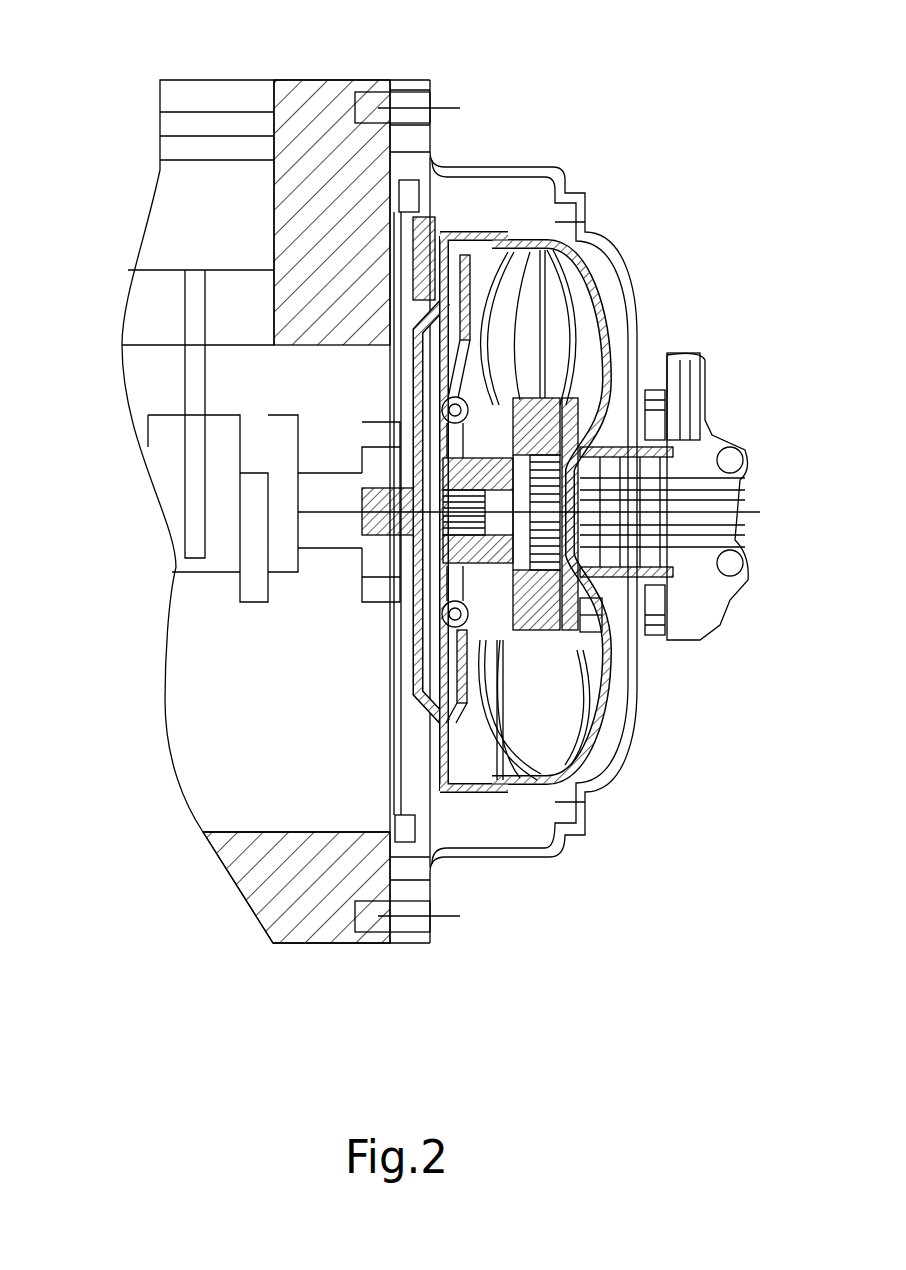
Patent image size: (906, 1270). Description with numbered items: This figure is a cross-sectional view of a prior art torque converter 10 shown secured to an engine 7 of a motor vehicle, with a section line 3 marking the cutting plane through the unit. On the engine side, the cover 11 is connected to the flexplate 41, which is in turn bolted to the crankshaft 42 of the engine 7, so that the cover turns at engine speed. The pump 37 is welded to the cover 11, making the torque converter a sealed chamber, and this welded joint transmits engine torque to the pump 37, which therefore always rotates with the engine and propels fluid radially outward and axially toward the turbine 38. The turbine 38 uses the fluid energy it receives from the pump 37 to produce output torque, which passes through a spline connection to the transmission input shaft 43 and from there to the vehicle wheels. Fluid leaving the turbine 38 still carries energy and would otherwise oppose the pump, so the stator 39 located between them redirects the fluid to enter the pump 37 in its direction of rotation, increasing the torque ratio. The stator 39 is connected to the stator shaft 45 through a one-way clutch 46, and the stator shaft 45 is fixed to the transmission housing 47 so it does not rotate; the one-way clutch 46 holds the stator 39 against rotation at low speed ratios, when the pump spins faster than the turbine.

The section line III-III 3 is at (409, 810).
The engine 7 is at (400, 859).
The torque converter 10 is at (606, 273).
The cover 11 is at (393, 367).
The pump 37 is at (602, 746).
The turbine 38 is at (480, 750).
The stator 39 is at (505, 667).
The flexplate 41 is at (403, 648).
The crankshaft 42 is at (350, 567).
The transmission input shaft 43 is at (690, 530).
The stator shaft 45 is at (682, 455).
The one-way clutch 46 is at (582, 616).
The transmission housing 47 is at (690, 370).